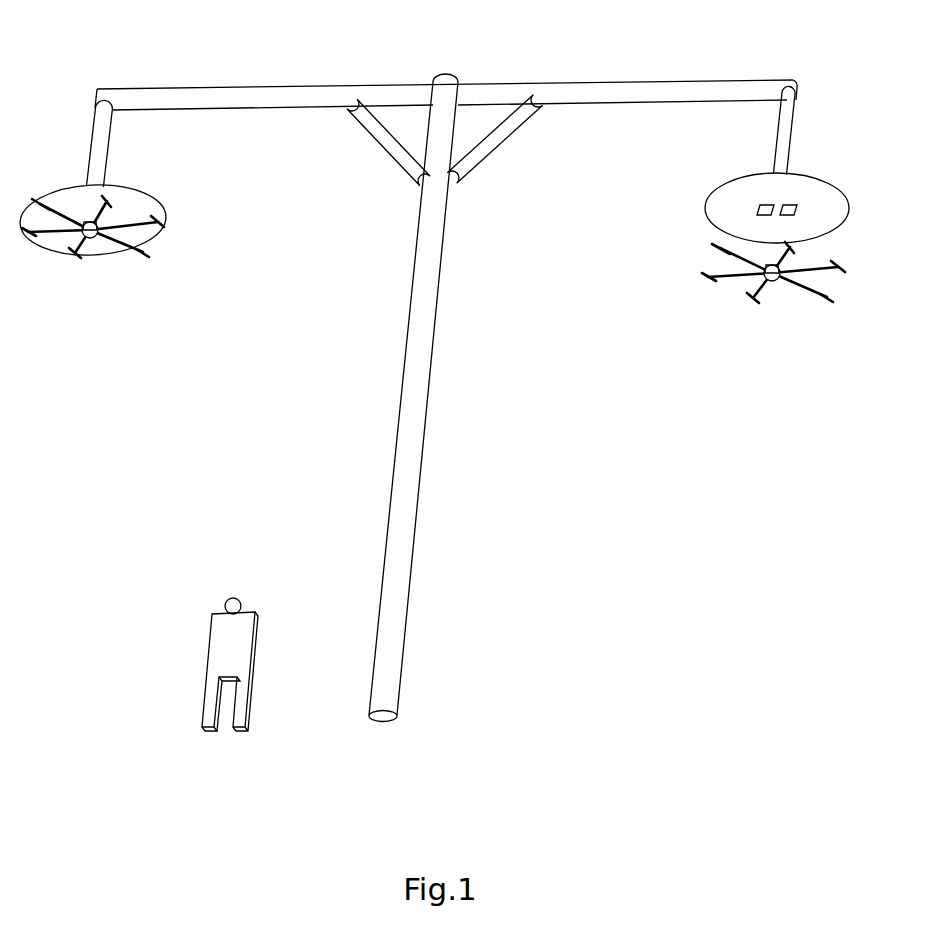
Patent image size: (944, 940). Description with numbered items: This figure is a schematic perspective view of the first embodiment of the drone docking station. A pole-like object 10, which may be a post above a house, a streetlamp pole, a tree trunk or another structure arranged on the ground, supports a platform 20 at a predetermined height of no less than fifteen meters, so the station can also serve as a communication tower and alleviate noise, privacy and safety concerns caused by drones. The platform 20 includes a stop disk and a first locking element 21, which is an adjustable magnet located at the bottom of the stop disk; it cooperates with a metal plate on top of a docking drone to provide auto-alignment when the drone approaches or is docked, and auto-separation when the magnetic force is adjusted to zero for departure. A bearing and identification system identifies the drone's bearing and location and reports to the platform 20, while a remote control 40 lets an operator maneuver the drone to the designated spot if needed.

The pole-like object 10 is at (412, 497).
The platform 20 is at (112, 72).
The first locking element 21 is at (787, 203).
The remote control 40 is at (210, 643).